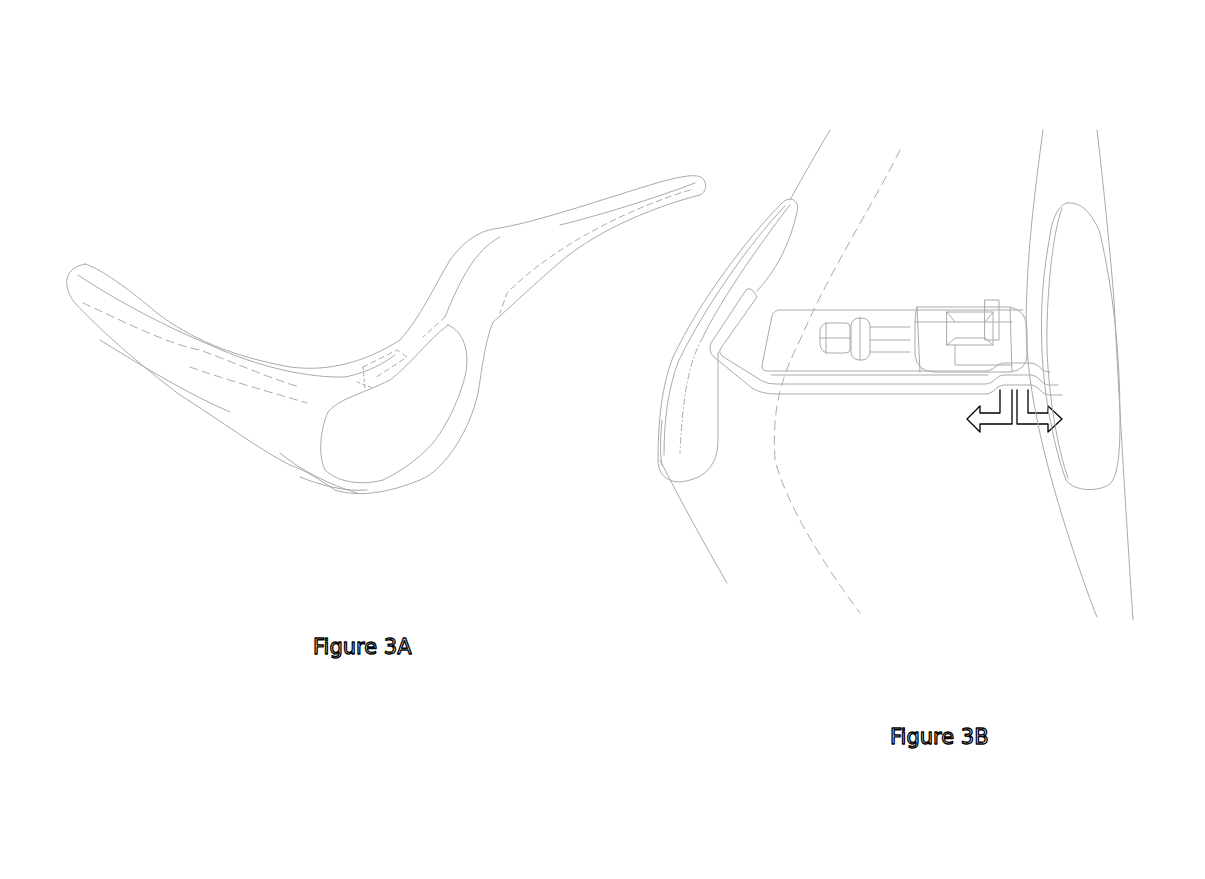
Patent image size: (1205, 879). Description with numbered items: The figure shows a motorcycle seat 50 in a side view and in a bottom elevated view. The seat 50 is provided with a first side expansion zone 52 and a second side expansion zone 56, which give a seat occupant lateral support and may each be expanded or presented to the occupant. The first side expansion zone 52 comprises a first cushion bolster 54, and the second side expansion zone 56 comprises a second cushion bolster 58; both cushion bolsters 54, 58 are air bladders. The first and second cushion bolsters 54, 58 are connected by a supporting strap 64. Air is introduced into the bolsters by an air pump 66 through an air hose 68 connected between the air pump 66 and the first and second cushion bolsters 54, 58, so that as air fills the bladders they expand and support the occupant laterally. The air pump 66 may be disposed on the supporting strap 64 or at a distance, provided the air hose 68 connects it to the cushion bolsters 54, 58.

In FIG. 3B, the motorcycle seat 50 is at (1070, 653).
In FIG. 3B, the first side expansion zone 52 is at (688, 290).
In FIG. 3A, the first cushion bolster 54 is at (420, 437).
In FIG. 3B, the first cushion bolster 54 is at (665, 458).
In FIG. 3B, the second side expansion zone 56 is at (1049, 219).
In FIG. 3A, the second cushion bolster 58 is at (545, 175).
In FIG. 3B, the second cushion bolster 58 is at (1077, 460).
In FIG. 3A, the supporting strap 64 is at (390, 362).
In FIG. 3B, the supporting strap 64 is at (817, 315).
In FIG. 3B, the air pump 66 is at (905, 315).
In FIG. 3B, the air hose 68 is at (860, 393).